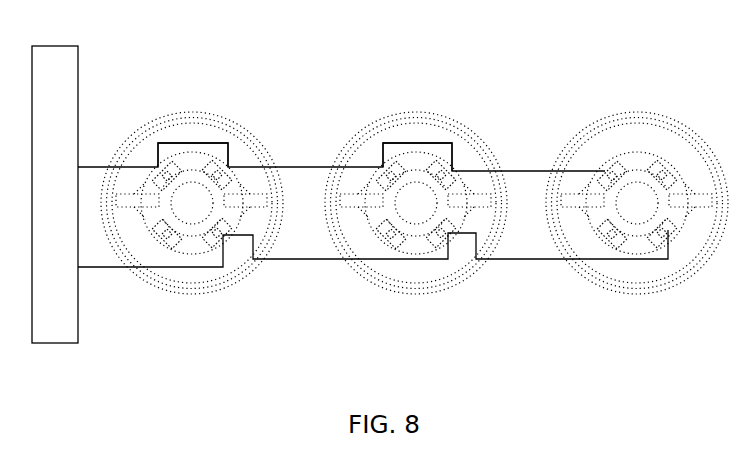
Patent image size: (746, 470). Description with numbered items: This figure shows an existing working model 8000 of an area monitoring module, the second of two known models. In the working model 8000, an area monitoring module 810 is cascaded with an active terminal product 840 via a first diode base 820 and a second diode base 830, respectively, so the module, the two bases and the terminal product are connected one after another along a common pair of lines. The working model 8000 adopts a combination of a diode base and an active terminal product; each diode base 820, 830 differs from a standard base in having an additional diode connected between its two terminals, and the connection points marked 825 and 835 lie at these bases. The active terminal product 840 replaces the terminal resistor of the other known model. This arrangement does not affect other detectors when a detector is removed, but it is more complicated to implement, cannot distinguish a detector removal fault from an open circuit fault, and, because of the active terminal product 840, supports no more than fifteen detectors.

The working model 8000 is at (654, 32).
The area monitoring module 810 is at (55, 211).
The first diode base 820 is at (192, 221).
The first motor connection 825 is at (215, 108).
The second diode base 830 is at (416, 218).
The second motor connection 835 is at (440, 113).
The active terminal product 840 is at (637, 220).